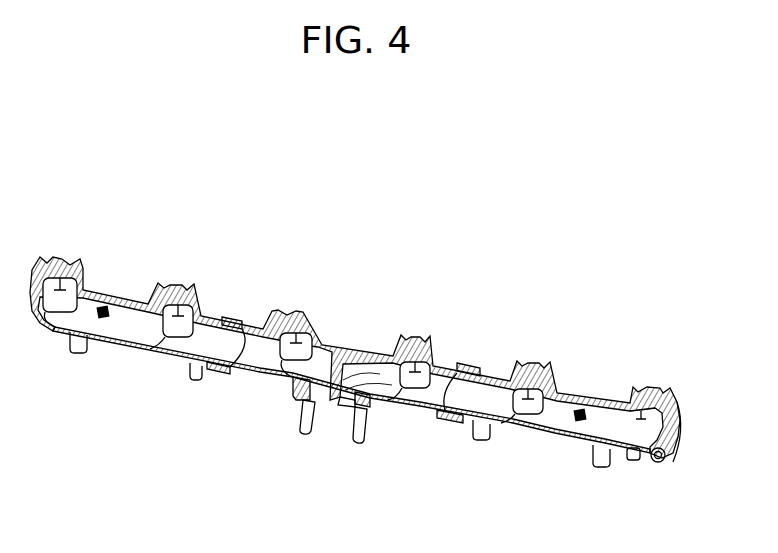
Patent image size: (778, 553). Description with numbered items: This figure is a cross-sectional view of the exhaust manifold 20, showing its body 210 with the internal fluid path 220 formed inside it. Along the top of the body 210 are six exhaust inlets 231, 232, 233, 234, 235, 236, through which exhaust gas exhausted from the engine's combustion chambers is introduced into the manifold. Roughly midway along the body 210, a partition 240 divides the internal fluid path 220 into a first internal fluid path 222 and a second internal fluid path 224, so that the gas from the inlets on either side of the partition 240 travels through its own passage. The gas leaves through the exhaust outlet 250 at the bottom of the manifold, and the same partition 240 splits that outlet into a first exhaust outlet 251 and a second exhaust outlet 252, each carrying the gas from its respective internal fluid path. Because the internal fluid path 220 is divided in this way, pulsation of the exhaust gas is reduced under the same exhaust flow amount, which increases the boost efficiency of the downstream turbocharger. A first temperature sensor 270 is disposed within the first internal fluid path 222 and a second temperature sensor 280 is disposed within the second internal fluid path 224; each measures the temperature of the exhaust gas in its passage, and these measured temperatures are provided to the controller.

The exhaust manifold 20 is at (511, 268).
The body 210 is at (674, 462).
The internal fluid path 220 is at (343, 287).
The first internal fluid path 222 is at (211, 340).
The second internal fluid path 224 is at (447, 388).
The exhaust inlet 231 is at (62, 262).
The exhaust inlet 232 is at (185, 286).
The exhaust inlet 233 is at (307, 311).
The exhaust inlet 234 is at (404, 335).
The exhaust inlet 235 is at (541, 362).
The exhaust inlet 236 is at (633, 388).
The partition 240 is at (333, 348).
The exhaust outlet 250 is at (306, 452).
The first exhaust outlet 251 is at (305, 400).
The second exhaust outlet 252 is at (352, 447).
The first temperature sensor 270 is at (103, 318).
The second temperature sensor 280 is at (580, 421).